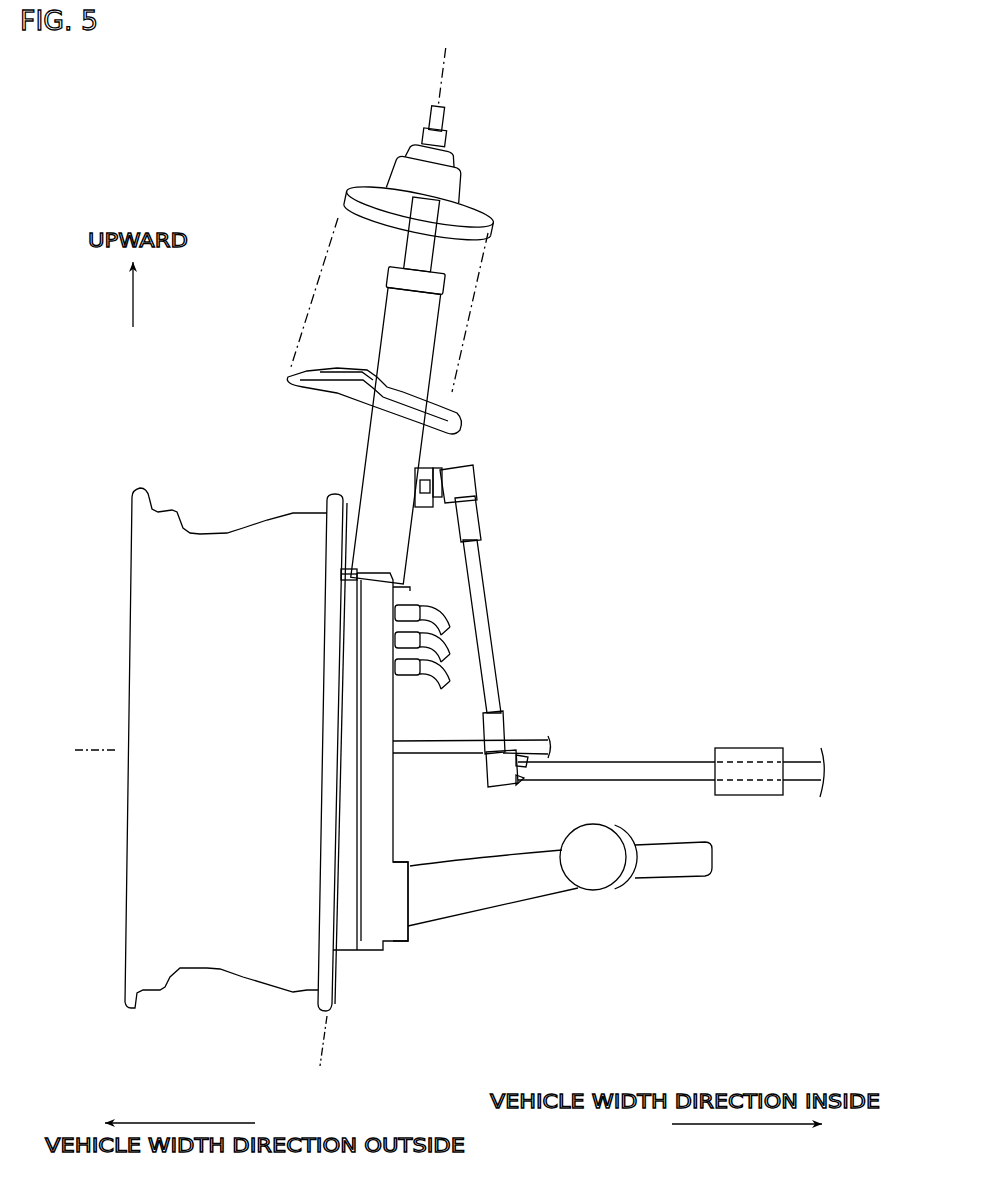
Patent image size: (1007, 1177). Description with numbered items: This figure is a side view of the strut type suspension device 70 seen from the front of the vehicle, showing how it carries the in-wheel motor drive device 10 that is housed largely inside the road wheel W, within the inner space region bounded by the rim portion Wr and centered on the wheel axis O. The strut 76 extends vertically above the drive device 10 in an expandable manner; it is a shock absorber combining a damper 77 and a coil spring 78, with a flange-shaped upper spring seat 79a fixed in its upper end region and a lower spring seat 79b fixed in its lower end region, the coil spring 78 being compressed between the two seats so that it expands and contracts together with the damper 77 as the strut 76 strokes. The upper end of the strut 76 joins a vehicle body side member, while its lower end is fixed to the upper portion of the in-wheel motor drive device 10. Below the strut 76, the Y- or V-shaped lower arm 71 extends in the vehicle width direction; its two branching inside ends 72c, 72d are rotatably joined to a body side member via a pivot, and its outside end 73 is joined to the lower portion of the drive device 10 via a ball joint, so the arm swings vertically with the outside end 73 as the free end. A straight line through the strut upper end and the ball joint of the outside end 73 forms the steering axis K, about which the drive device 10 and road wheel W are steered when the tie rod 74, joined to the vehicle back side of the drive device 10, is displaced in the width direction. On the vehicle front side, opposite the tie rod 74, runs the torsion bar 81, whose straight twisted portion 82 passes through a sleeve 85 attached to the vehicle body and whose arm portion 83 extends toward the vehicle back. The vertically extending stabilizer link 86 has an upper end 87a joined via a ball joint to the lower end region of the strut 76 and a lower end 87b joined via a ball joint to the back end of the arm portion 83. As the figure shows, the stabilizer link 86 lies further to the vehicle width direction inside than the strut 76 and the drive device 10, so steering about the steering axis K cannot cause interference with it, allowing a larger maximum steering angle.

The suspension device 70 is at (534, 295).
The lower arm 71 is at (513, 907).
The vehicle width direction inside end 72c is at (592, 879).
The vehicle width direction inside end 72d is at (708, 857).
The vehicle width direction outside end 73 is at (415, 912).
The tie rod 74 is at (427, 748).
The strut 76 is at (364, 446).
The damper 77 is at (388, 282).
The coil spring 78 is at (336, 222).
The upper spring seat 79a is at (356, 184).
The lower spring seat 79b is at (309, 392).
The torsion bar 81 is at (622, 761).
The twisted portion 82 is at (670, 767).
The arm portion 83 is at (511, 781).
The sleeve 85 is at (750, 752).
The stabilizer link 86 is at (478, 574).
The upper end 87a is at (468, 483).
The lower end 87b is at (490, 774).
The in-wheel motor drive device 10 is at (367, 966).
The road wheel W is at (130, 592).
The rim portion Wr is at (243, 952).
The axis O is at (86, 751).
The steering axis K is at (320, 1054).